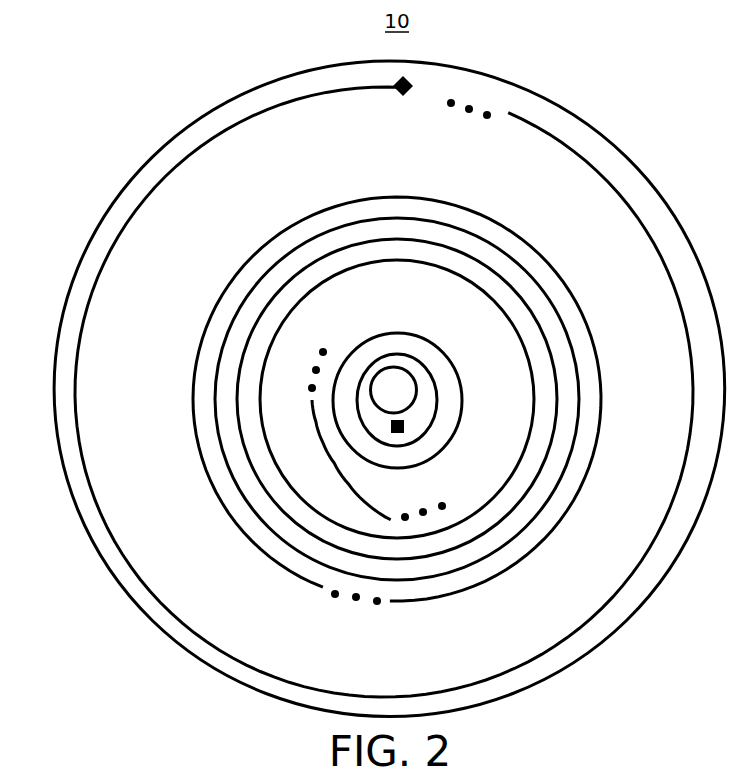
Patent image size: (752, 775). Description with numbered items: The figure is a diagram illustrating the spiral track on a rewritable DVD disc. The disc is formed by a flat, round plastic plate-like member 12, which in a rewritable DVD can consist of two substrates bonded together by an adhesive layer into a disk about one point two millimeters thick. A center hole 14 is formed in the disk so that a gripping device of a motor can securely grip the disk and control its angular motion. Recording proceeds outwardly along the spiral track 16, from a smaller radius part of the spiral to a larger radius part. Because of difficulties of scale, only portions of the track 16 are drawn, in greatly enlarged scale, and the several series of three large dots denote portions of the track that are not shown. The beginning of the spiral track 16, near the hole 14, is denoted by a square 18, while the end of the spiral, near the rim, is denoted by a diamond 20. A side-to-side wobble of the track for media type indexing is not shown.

The plate-like member 12 is at (574, 110).
The center hole 14 is at (417, 392).
The spiral track 16 is at (278, 262).
The square 18 is at (397, 433).
The diamond 20 is at (408, 85).